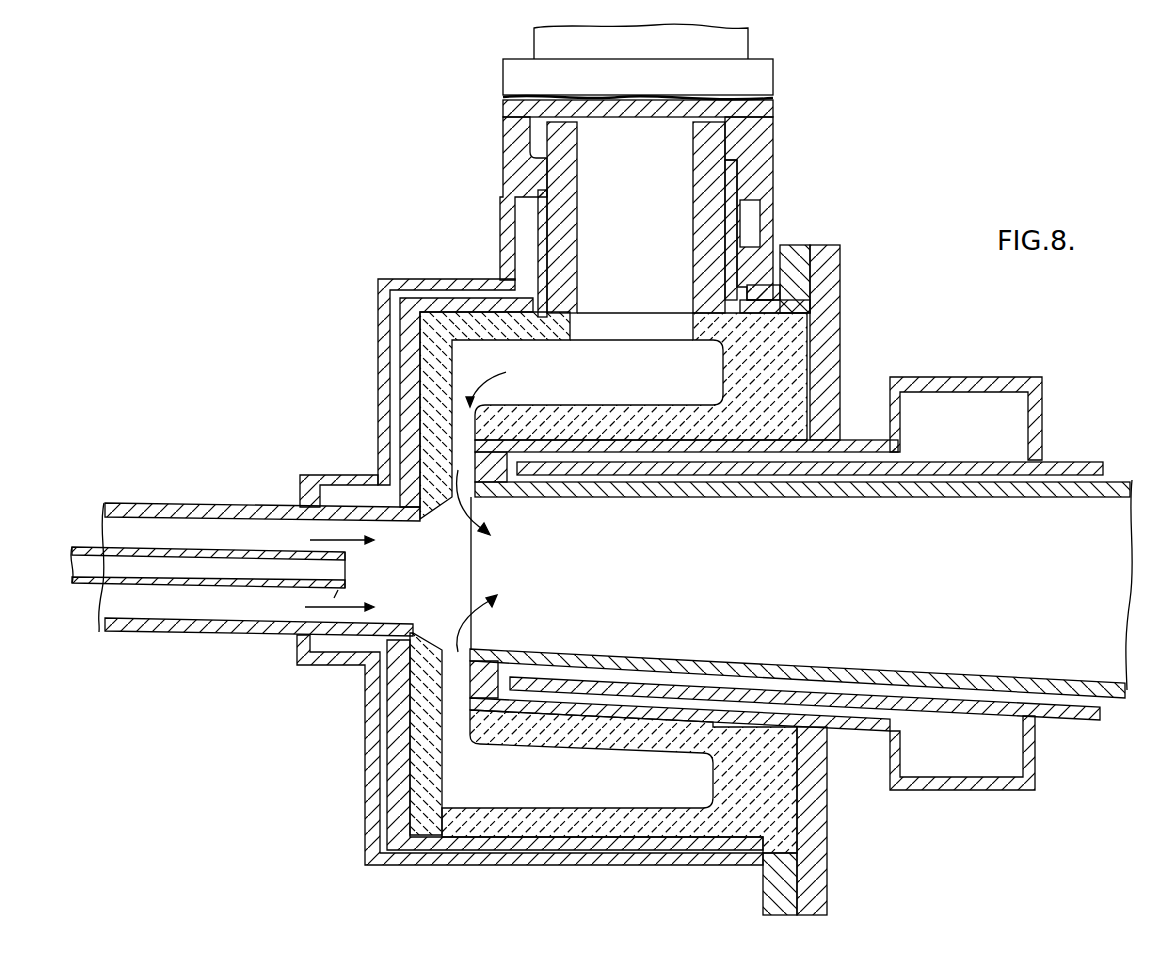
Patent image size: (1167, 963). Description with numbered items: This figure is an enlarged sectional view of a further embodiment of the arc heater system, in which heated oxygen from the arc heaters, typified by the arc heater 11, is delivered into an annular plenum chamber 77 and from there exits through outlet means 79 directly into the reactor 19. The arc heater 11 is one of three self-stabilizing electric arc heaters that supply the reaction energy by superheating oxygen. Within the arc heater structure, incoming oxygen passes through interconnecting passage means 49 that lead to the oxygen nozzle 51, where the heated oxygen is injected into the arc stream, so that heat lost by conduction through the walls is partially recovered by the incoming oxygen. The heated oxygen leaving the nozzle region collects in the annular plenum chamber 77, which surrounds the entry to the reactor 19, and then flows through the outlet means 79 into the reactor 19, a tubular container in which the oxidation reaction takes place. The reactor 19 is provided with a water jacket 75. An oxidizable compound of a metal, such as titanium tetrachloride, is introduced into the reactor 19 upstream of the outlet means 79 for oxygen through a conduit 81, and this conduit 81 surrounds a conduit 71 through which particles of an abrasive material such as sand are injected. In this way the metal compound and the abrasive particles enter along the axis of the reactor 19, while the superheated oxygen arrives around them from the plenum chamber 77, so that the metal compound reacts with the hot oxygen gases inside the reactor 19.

The arc heater 11 is at (534, 38).
The oxygen nozzle 51 is at (577, 141).
The interconnecting passage means 49 is at (394, 372).
The annular plenum chamber 77 is at (725, 345).
The outlet means 79 is at (494, 474).
The conduit 81 is at (198, 513).
The conduit 71 is at (82, 586).
The reactor 19 is at (906, 680).
The water jacket 75 is at (846, 718).